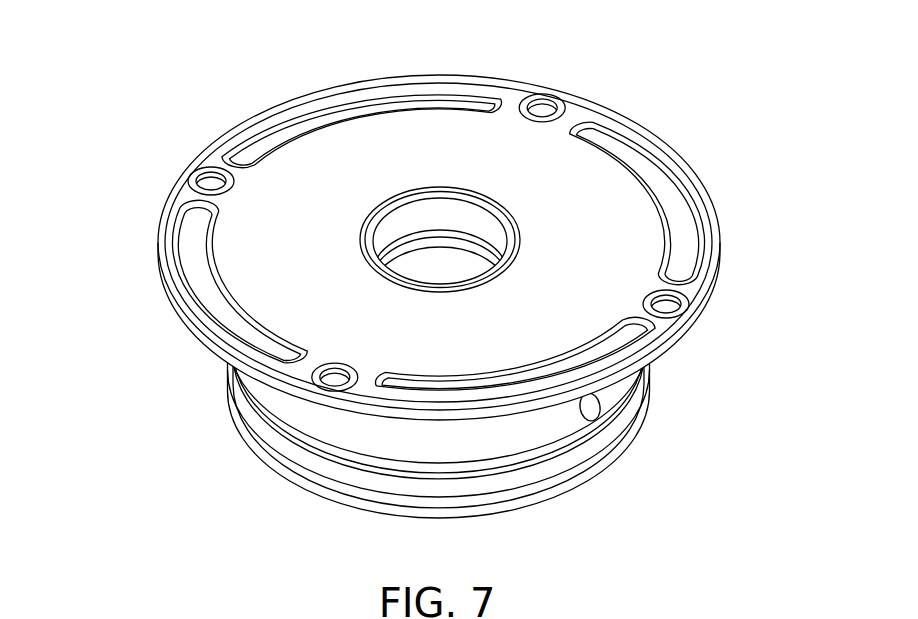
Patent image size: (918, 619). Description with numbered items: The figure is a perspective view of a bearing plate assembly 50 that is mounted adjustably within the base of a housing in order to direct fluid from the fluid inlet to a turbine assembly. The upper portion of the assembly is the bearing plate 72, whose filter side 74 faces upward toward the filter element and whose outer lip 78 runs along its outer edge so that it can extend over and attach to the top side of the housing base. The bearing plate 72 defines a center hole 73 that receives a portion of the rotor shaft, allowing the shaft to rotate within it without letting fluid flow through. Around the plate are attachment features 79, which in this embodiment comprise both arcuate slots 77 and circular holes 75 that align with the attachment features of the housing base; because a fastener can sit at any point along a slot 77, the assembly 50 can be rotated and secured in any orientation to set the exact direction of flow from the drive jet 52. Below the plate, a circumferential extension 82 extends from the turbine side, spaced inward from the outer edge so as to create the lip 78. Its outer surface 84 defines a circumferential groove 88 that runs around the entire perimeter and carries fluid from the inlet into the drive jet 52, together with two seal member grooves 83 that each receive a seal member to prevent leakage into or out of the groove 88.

The bearing plate assembly 50 is at (722, 92).
The drive jet 52 is at (593, 407).
The bearing plate 72 is at (683, 158).
The center hole 73 is at (474, 219).
The filter side 74 is at (384, 150).
The holes 75 is at (544, 105).
The slots 77 is at (469, 95).
The outer lip 78 is at (710, 198).
The attachment features 79 is at (436, 276).
The circumferential extension 82 is at (583, 485).
The seal member grooves 83 is at (417, 493).
The outer surface 84 is at (278, 411).
The circumferential groove 88 is at (502, 450).